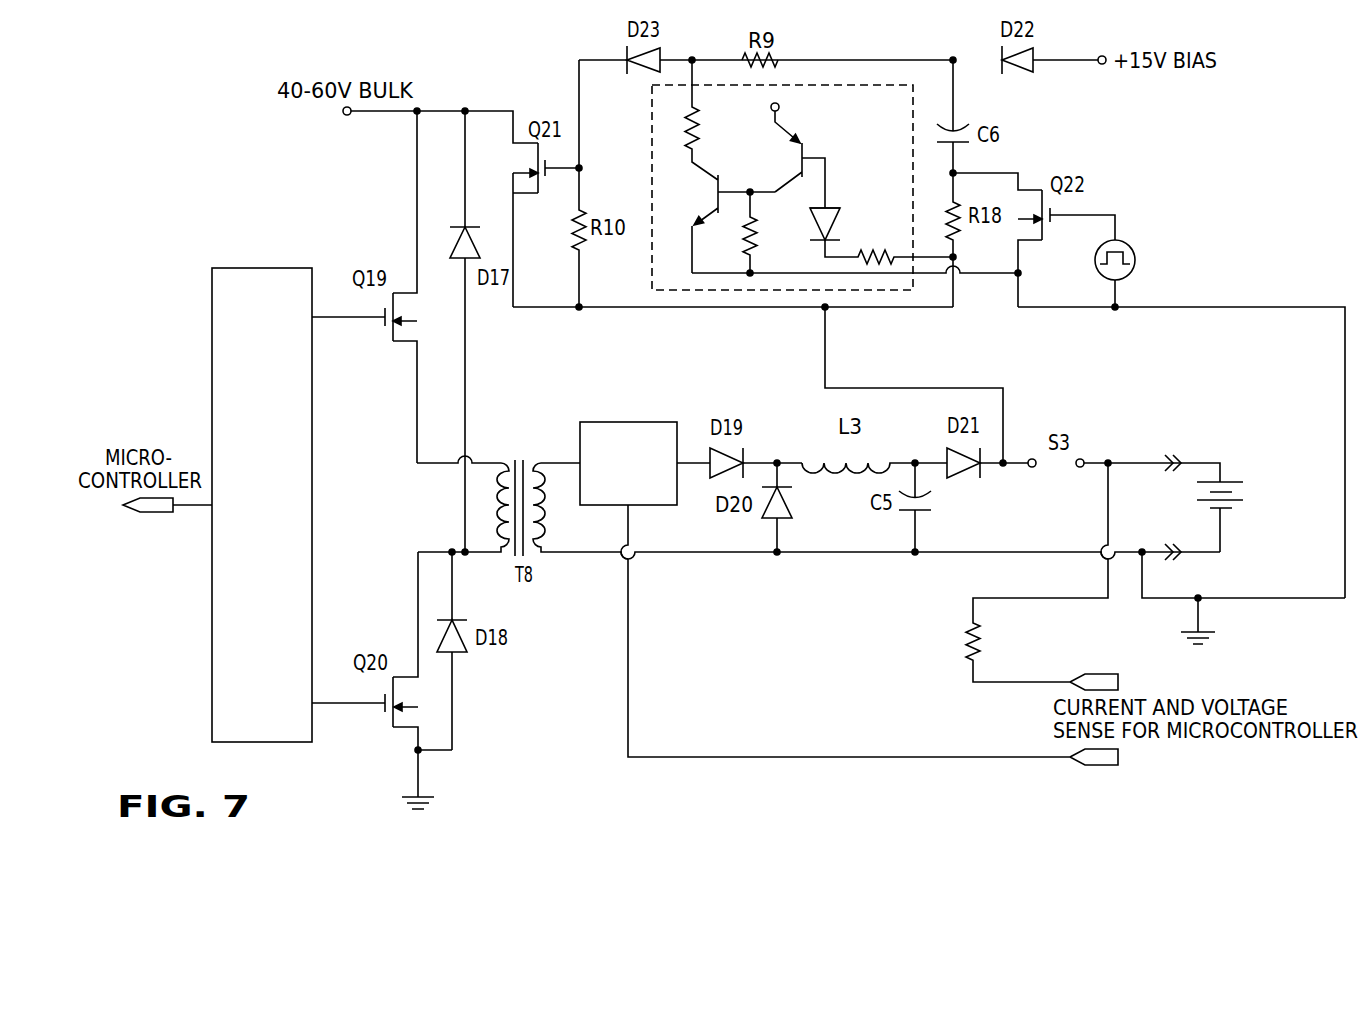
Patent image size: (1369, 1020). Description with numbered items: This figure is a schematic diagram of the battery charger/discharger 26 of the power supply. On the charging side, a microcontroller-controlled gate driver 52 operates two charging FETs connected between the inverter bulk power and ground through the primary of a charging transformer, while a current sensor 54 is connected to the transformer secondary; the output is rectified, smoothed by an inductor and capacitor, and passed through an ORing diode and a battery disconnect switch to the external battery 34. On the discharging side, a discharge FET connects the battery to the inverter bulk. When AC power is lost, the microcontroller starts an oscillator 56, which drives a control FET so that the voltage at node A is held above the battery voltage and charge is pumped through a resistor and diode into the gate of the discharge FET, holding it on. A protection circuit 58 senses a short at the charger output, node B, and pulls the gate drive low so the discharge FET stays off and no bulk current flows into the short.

The gate driver 52 is at (263, 268).
The current sensor 54 is at (615, 422).
The oscillator 56 is at (1122, 238).
The protection circuit 58 is at (857, 85).
The battery charger/discharger 26 is at (802, 772).
The battery 34 is at (1227, 480).
The node A is at (953, 58).
The node B is at (1005, 460).